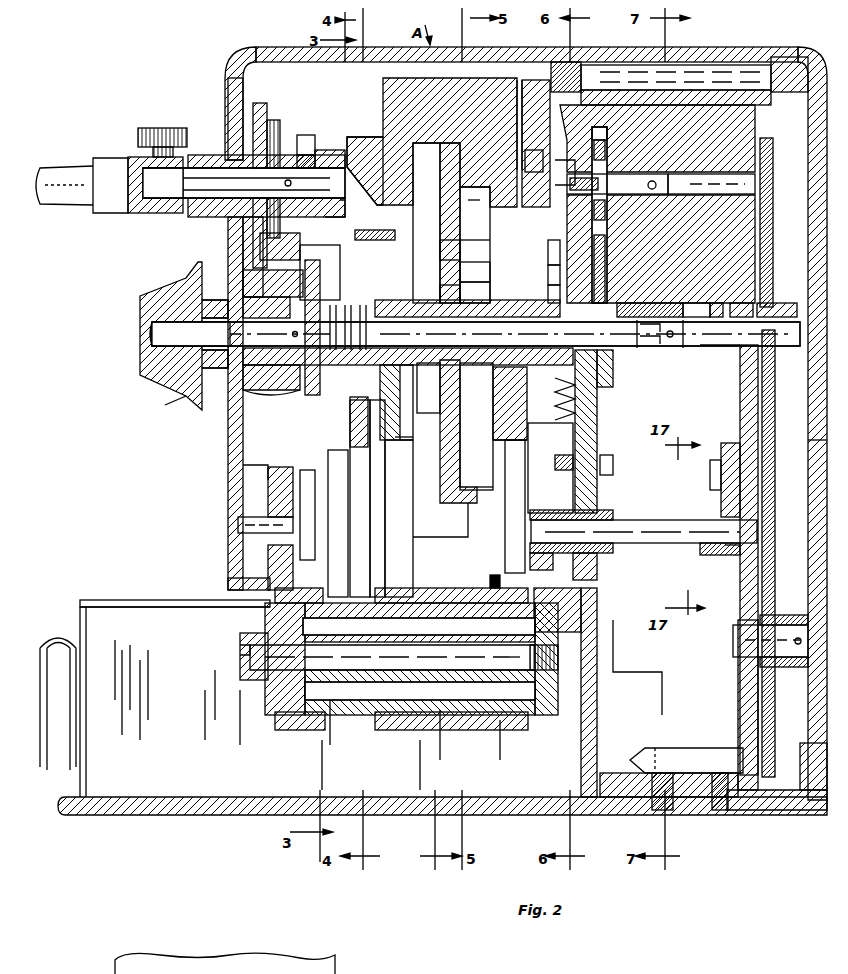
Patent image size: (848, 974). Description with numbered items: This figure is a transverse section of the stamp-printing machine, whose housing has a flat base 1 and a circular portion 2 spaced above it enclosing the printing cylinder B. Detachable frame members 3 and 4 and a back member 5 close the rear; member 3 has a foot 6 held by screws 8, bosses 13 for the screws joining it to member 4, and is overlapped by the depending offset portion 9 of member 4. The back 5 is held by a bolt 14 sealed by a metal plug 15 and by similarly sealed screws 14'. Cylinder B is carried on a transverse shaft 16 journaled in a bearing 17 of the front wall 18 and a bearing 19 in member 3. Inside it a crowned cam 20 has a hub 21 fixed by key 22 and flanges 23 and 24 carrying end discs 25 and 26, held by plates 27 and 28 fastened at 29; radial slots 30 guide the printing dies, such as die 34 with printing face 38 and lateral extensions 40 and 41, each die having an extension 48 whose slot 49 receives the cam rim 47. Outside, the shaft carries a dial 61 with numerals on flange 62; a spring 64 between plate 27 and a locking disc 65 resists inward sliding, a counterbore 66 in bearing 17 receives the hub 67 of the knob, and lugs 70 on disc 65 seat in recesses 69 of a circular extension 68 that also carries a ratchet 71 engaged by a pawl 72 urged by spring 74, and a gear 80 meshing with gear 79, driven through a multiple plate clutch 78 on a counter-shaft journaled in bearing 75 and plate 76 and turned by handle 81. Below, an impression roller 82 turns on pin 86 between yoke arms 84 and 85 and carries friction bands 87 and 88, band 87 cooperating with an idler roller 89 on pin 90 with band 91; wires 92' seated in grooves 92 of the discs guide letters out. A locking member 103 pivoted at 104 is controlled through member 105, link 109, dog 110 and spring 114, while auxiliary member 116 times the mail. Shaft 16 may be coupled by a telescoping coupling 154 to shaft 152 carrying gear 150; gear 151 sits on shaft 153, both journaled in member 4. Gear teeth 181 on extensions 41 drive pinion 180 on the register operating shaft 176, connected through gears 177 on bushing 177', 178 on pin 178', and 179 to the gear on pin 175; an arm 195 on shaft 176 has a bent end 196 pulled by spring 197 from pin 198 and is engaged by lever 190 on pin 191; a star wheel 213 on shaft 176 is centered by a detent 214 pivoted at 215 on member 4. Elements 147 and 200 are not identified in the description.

The base 1 is at (248, 812).
The circular portion 2 is at (228, 460).
The frame member 3 is at (600, 663).
The frame member 4 is at (738, 680).
The back member 5 is at (810, 448).
The foot 6 is at (612, 812).
The screws 8 is at (666, 812).
The depending offset portion 9 is at (554, 294).
The bosses 13 is at (205, 168).
The bolt 14 is at (676, 61).
The bolts or screws 14' is at (686, 740).
The metal plug 15 is at (785, 56).
The central transverse shaft 16 is at (152, 340).
The bearing 17 is at (250, 390).
The front wall 18 is at (238, 495).
The bearing 19 is at (614, 303).
The crowned cam 20 is at (475, 241).
The hub 21 is at (455, 431).
The key 22 is at (475, 291).
The flange 23 is at (440, 258).
The flange 24 is at (475, 268).
The disc 25 is at (380, 490).
The disc 26 is at (505, 455).
The plate 27 is at (323, 327).
The plate 28 is at (549, 252).
The screws or bolts 29 is at (492, 284).
The radial slot 30 is at (395, 218).
The stamp printing die 34 is at (500, 108).
The printing faces 38 is at (410, 80).
The lateral extension 40 is at (360, 150).
The lateral extension 41 is at (558, 168).
The rim 47 is at (491, 476).
The extension 48 is at (475, 245).
The slot 49 is at (426, 223).
The knob or dial 61 is at (160, 382).
The flange 62 is at (170, 402).
The compression spring 64 is at (408, 370).
The locking disc 65 is at (272, 303).
The counterbore 66 is at (215, 296).
The hub 67 is at (215, 370).
The circular extension 68 is at (342, 201).
The radial recesses 69 is at (324, 272).
The radially extended lugs 70 is at (373, 226).
The initial ratchet 71 is at (260, 240).
The pawl 72 is at (303, 135).
The spring 74 is at (318, 152).
The bearing 75 is at (200, 217).
The plate 76 is at (333, 150).
The multiple plate clutch 78 is at (273, 120).
The gear 79 is at (240, 100).
The gear 80 is at (245, 280).
The operating handle 81 is at (76, 165).
The impression roller 82 is at (280, 700).
The arm 84 is at (255, 633).
The arm 85 is at (548, 680).
The pin 86 is at (270, 662).
The friction band 87 is at (300, 730).
The friction band 88 is at (485, 730).
The idler roller 89 is at (268, 562).
The pin 90 is at (240, 525).
The frictional band 91 is at (262, 470).
The peripheral grooves 92 is at (401, 586).
The wires 92' is at (479, 567).
The locking member 103 is at (400, 415).
The pivot 104 is at (350, 425).
The member 105 is at (360, 528).
The link 109 is at (300, 470).
The dog 110 is at (385, 462).
The spring 114 is at (308, 515).
The auxiliary member 116 is at (340, 558).
The plate 147 is at (200, 600).
The gear 150 is at (773, 290).
The gear 151 is at (775, 560).
The shaft 152 is at (712, 345).
The shaft 153 is at (733, 628).
The telescoping coupling 154 is at (707, 300).
The pin 175 is at (711, 184).
The register operating shaft 176 is at (650, 520).
The gear 177 is at (711, 560).
The bushing 177' is at (677, 301).
The gear 178 is at (612, 431).
The pin 178' is at (627, 466).
The gear 179 is at (660, 556).
The pinion 180 is at (550, 468).
The gear teeth 181 is at (534, 150).
The lever 190 is at (592, 228).
The pin 191 is at (617, 184).
The arm 195 is at (551, 458).
The bent end portion 196 is at (500, 436).
The spring 197 is at (580, 395).
The pin 198 is at (500, 416).
The sleeve 200 is at (590, 62).
The ratchet or star wheel 213 is at (725, 545).
The detent 214 is at (710, 468).
The pivot 215 is at (721, 475).
The printing cylinder B is at (408, 435).